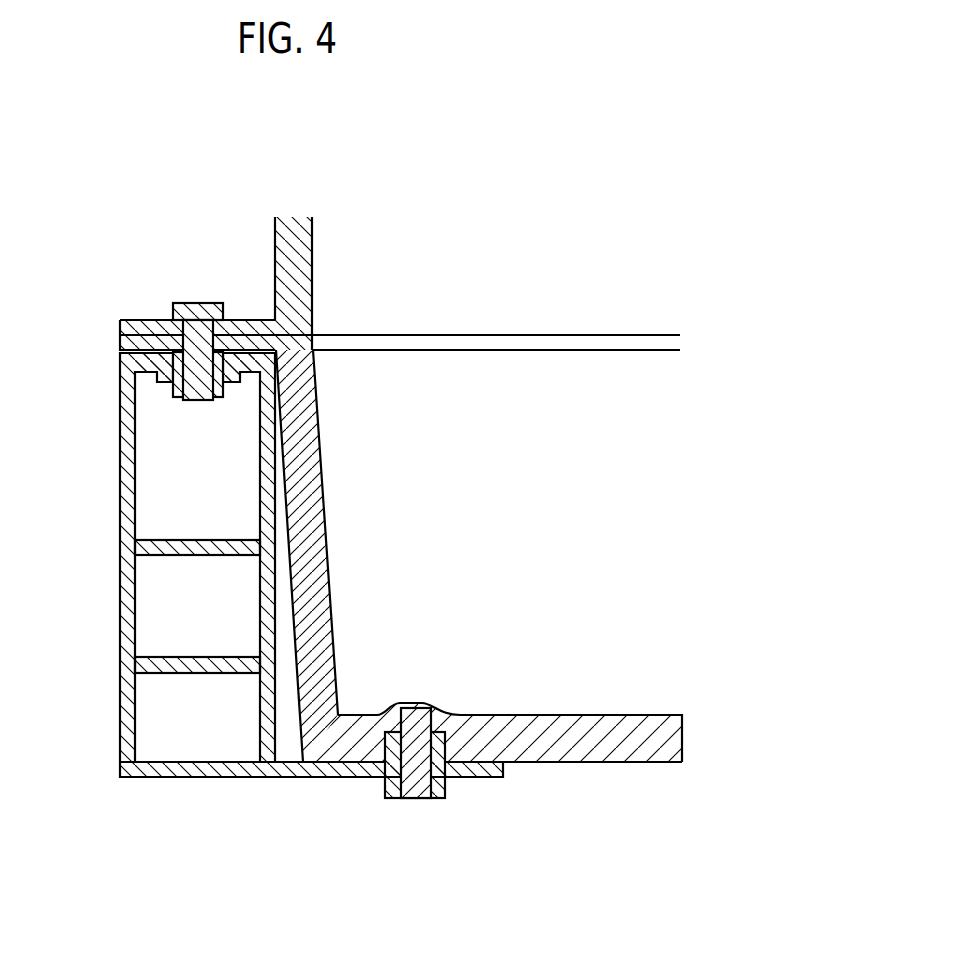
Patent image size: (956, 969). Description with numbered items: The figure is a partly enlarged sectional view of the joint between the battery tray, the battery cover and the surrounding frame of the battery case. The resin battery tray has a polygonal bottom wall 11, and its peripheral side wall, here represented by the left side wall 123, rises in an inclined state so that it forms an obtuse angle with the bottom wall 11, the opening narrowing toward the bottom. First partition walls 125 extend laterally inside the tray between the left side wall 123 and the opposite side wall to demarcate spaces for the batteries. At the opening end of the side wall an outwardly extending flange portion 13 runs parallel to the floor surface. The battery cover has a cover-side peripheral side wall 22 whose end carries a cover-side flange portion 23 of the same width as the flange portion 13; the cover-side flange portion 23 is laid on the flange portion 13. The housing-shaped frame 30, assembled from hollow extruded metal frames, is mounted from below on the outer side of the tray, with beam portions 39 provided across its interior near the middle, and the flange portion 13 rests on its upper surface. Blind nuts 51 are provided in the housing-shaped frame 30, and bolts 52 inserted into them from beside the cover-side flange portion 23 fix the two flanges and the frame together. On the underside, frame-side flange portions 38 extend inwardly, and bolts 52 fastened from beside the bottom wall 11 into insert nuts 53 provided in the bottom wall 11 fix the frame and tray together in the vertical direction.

The bottom wall 11 is at (623, 725).
The flange portion 13 is at (130, 343).
The cover-side peripheral side wall 22 is at (296, 268).
The cover-side flange portion 23 is at (142, 325).
The housing-shaped frame 30 is at (130, 535).
The frame-side flange portion 38 is at (310, 768).
The beam portion 39 is at (167, 555).
The blind nut 51 is at (170, 383).
The bolt 52 is at (180, 402).
The insert nut 53 is at (467, 772).
The left side wall 123 is at (306, 455).
The first partition wall 125 is at (571, 375).